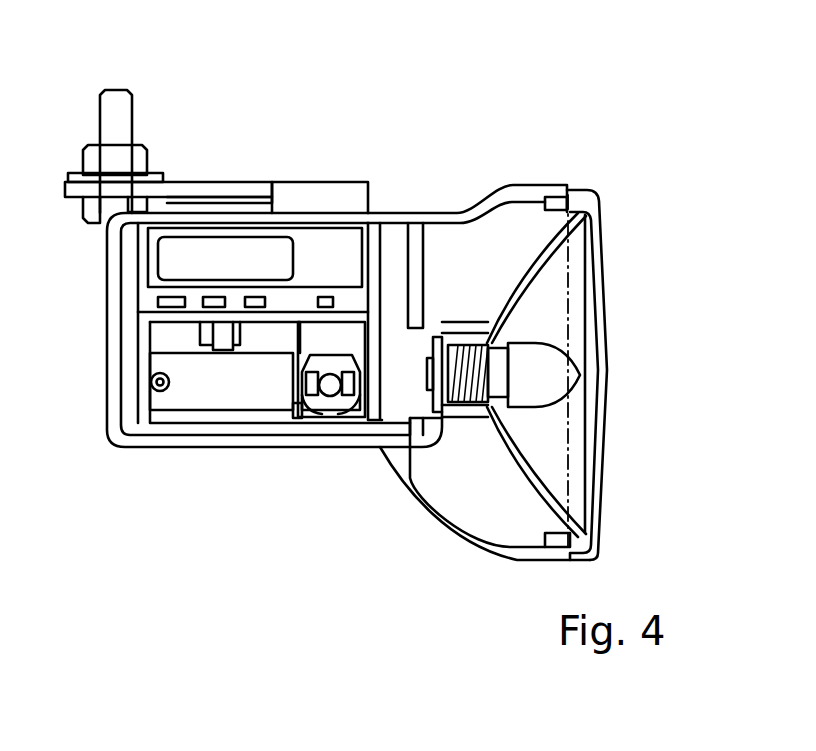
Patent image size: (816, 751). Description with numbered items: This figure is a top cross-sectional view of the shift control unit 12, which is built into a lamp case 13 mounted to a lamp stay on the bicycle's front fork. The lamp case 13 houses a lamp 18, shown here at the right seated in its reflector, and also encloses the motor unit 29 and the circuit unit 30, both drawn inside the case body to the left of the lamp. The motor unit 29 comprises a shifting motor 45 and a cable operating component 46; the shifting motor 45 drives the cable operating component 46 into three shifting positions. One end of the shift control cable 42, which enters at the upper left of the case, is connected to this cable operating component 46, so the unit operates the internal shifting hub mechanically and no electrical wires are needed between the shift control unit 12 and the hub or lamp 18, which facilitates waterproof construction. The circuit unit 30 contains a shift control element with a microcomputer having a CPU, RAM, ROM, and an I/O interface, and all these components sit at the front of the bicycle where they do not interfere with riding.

The shift control unit 12 is at (396, 167).
The lamp case 13 is at (408, 212).
The lamp 18 is at (532, 362).
The motor unit 29 is at (247, 425).
The circuit unit 30 is at (242, 250).
The shift control cable 42 is at (120, 128).
The shifting motor 45 is at (307, 395).
The cable operating component 46 is at (207, 395).